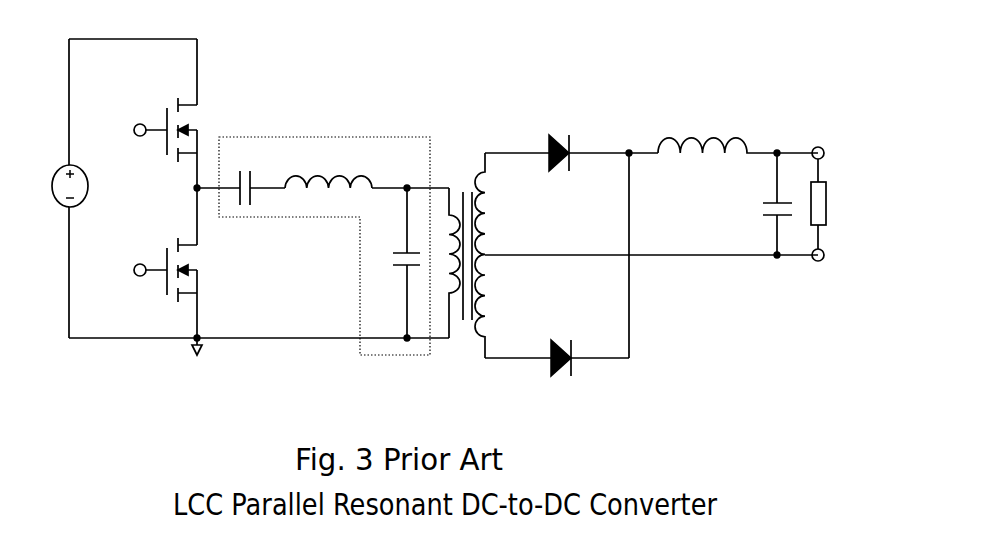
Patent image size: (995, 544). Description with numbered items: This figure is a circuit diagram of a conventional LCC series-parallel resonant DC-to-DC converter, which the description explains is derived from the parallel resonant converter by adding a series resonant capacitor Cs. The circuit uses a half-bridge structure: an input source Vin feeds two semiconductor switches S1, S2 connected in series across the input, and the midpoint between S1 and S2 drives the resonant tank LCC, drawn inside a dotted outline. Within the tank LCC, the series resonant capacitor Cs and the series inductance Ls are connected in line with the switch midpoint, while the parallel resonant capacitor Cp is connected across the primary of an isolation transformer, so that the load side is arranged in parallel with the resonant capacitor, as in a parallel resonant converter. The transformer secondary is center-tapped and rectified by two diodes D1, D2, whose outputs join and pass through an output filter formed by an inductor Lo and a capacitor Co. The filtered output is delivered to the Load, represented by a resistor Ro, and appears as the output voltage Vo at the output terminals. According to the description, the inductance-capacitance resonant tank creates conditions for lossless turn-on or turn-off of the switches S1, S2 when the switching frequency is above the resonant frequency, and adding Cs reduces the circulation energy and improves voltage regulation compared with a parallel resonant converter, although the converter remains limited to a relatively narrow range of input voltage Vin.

The input DC voltage source Vin is at (75, 103).
The upper switch (MOSFET) S1 is at (165, 109).
The lower switch (MOSFET) S2 is at (165, 255).
The LCC resonant tank LCC is at (323, 83).
The series resonant capacitor Cs is at (254, 173).
The series resonant inductor Ls is at (328, 164).
The parallel resonant capacitor Cp is at (398, 263).
The rectifier diode 1 D1 is at (583, 164).
The rectifier diode 2 D2 is at (584, 378).
The output filter inductor Lo is at (738, 166).
The output filter capacitor Co is at (764, 204).
The load resistor Ro is at (839, 204).
The load Load is at (798, 153).
The output voltage terminals Vo is at (846, 197).